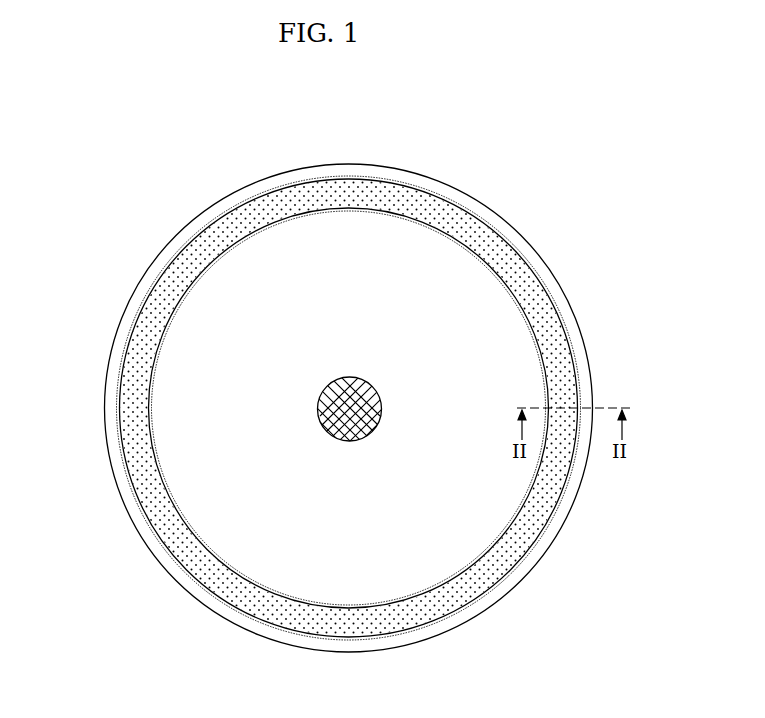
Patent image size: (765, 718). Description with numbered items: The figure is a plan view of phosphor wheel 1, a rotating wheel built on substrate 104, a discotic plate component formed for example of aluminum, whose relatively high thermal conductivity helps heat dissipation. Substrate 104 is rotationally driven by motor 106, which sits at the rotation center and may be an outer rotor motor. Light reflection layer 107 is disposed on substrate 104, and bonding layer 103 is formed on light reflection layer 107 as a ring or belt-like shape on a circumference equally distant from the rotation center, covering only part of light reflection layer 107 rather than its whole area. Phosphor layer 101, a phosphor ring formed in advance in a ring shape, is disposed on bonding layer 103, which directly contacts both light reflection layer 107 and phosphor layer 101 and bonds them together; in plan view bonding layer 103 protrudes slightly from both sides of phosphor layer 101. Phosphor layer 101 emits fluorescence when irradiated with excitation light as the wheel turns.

The phosphor wheel 1 is at (630, 165).
The phosphor layer 101 is at (145, 332).
The bonding layer 103 is at (482, 210).
The substrate 104 is at (538, 247).
The motor 106 is at (331, 378).
The light reflection layer 107 is at (570, 300).